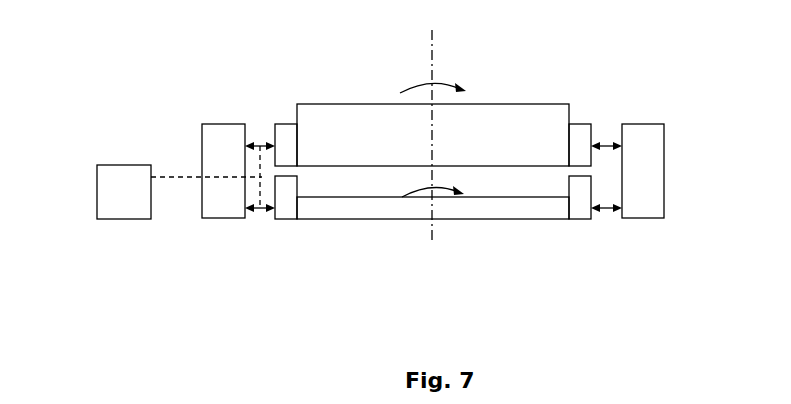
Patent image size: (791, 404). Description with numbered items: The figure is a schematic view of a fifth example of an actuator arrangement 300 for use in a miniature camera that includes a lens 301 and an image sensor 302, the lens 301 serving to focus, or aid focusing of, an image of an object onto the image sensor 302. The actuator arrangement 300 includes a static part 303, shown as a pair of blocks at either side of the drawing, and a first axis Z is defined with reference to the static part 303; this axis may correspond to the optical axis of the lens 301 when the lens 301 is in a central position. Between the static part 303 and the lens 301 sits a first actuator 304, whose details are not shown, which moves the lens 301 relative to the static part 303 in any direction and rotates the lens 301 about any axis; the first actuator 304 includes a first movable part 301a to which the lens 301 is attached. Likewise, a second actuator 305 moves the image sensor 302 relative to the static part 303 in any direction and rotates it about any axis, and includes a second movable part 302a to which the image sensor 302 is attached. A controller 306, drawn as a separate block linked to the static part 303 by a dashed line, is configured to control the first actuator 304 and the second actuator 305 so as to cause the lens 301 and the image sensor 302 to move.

The actuator arrangement 300 is at (104, 83).
The lens 301 is at (362, 113).
The first movable part 301a is at (280, 124).
The image sensor 302 is at (370, 219).
The second movable part 302a is at (285, 219).
The static part 303 is at (202, 152).
The first actuator 304 is at (260, 141).
The second actuator 305 is at (258, 213).
The controller 306 is at (97, 203).